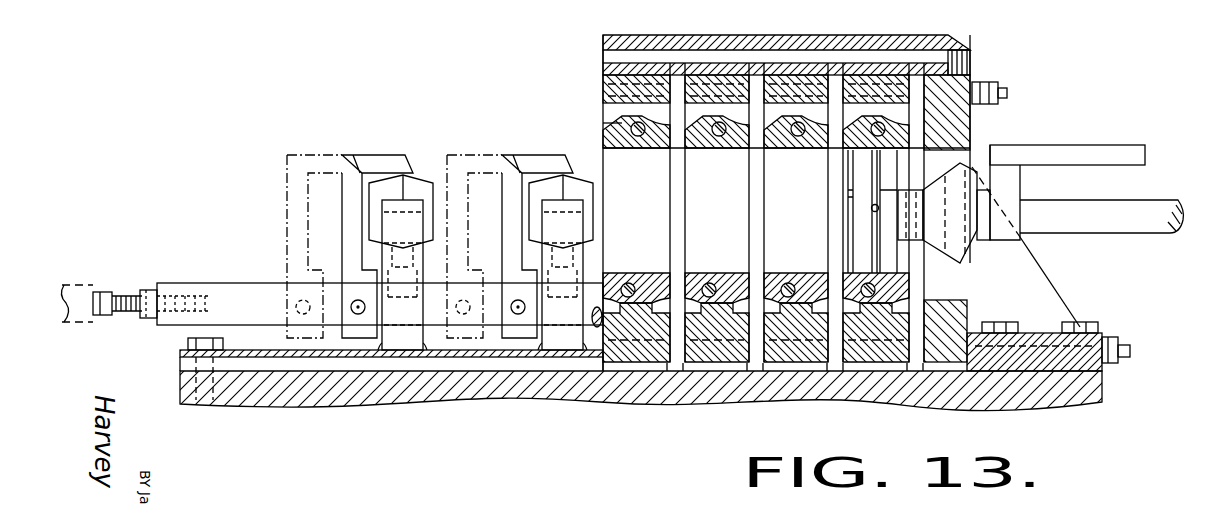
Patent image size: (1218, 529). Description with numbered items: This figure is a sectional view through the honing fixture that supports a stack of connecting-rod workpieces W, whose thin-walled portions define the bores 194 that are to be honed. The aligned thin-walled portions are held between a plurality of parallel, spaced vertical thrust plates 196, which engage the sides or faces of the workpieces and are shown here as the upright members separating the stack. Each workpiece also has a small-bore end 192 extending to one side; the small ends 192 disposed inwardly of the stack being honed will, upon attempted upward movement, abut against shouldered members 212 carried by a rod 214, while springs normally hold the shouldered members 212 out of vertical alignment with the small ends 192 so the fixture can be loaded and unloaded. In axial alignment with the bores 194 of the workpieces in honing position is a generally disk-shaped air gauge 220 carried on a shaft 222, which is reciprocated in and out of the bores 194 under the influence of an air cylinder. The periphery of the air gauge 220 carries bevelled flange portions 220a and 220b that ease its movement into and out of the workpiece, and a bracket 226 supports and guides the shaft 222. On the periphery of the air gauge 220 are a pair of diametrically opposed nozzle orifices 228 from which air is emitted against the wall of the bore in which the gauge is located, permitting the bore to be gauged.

The small end portion 192 is at (420, 177).
The bore 194 is at (713, 149).
The vertical thrust plates 196 is at (756, 228).
The shouldered members 212 is at (383, 137).
The rod 214 is at (242, 270).
The air gauge 220 is at (857, 191).
The bevelled flange portion 220a is at (857, 162).
The bevelled flange portion 220b is at (890, 167).
The shaft 222 is at (1068, 202).
The bracket 226 is at (1057, 150).
The nozzle orifices 228 is at (872, 212).
The workpiece W is at (617, 124).